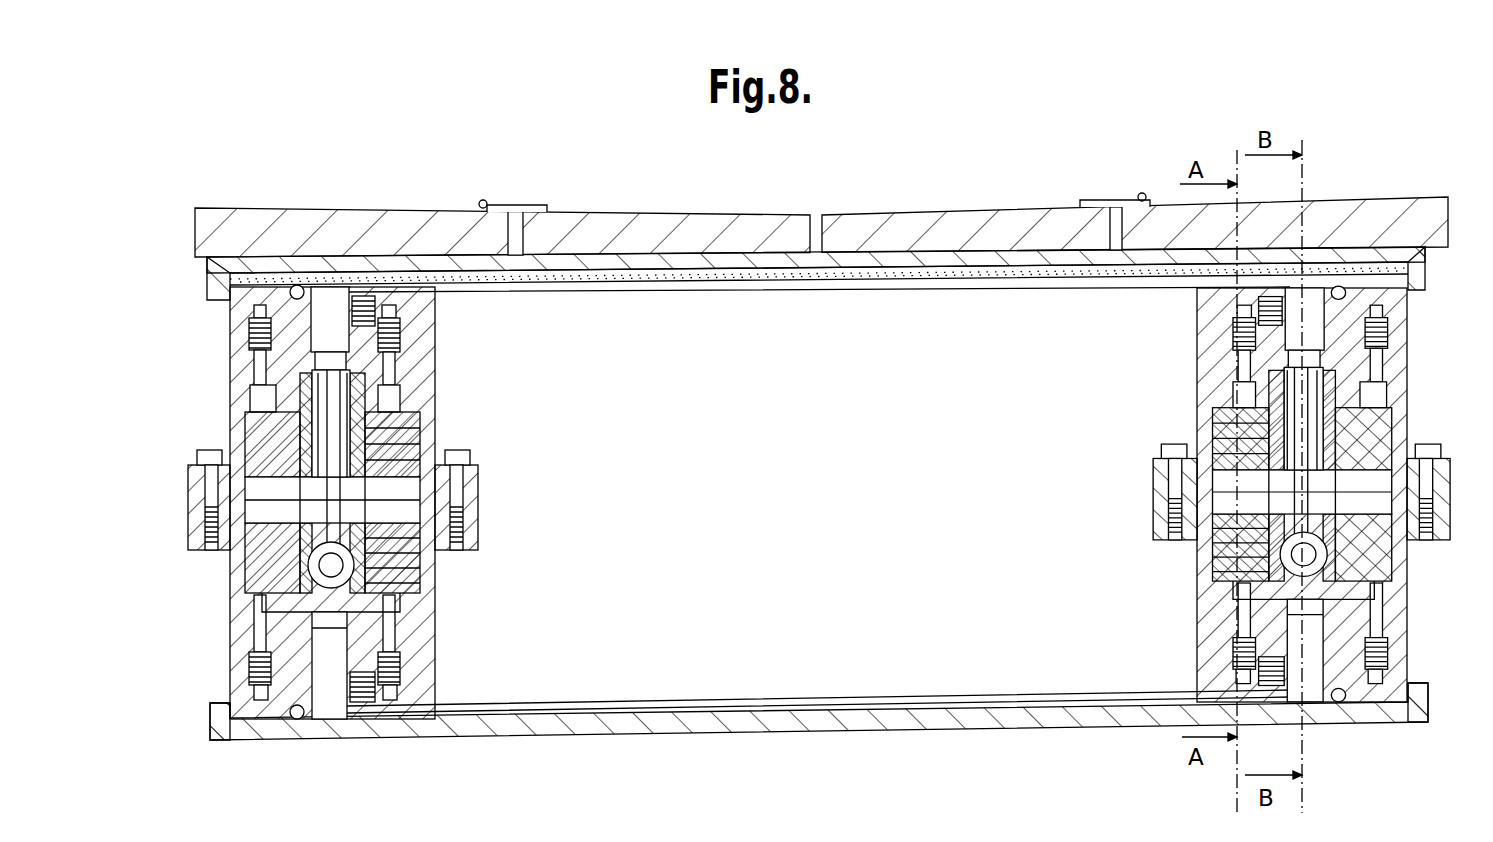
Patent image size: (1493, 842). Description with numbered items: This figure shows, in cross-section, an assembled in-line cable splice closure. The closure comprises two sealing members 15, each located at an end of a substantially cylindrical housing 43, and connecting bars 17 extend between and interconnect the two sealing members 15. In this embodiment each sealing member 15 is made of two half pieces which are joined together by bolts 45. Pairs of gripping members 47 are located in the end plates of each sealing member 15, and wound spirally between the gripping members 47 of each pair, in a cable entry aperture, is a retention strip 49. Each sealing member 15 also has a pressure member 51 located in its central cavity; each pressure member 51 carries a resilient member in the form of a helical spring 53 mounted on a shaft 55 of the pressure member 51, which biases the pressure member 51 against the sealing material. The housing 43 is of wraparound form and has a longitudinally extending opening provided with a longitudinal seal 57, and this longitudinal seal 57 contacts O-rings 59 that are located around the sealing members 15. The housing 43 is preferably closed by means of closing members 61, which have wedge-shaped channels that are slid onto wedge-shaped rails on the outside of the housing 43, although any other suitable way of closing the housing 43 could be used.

The sealing member 15 is at (230, 325).
The connecting bar 17 is at (665, 285).
The housing 43 is at (1418, 268).
The bolt 45 is at (467, 520).
The gripping member 47 is at (268, 415).
The retention strip 49 is at (250, 594).
The pressure member 51 is at (240, 510).
The helical spring 53 is at (375, 400).
The shaft 55 is at (329, 410).
The longitudinal seal 57 is at (865, 262).
The O-ring 59 is at (1350, 284).
The closing member 61 is at (562, 218).